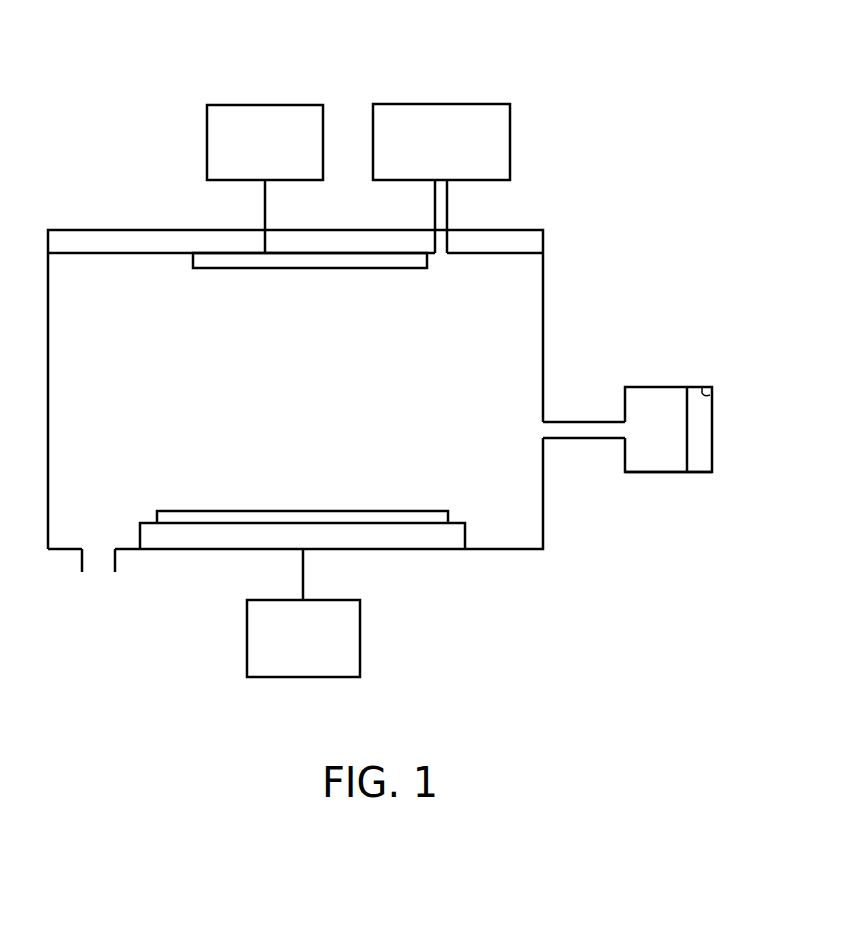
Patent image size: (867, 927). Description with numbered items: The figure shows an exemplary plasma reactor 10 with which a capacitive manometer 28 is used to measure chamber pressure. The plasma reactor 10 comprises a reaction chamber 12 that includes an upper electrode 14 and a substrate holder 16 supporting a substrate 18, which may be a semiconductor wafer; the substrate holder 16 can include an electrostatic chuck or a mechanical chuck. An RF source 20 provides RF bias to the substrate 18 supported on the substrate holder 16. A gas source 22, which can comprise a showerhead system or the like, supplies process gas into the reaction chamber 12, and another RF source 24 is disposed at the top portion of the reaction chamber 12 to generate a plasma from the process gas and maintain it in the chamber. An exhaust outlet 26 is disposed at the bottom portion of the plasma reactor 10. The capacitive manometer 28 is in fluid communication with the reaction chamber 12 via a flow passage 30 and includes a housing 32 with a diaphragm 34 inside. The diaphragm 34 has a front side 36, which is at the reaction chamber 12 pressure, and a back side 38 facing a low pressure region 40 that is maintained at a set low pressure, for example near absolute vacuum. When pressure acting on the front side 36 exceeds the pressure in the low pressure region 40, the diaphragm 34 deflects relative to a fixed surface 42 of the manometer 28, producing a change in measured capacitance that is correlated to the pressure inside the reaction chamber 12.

The plasma reactor 10 is at (114, 86).
The reaction chamber 12 is at (535, 290).
The upper electrode 14 is at (205, 258).
The substrate holder 16 is at (433, 540).
The substrate 18 is at (448, 513).
The RF source 20 is at (275, 680).
The gas source 22 is at (403, 104).
The RF source 24 is at (238, 104).
The exhaust outlet 26 is at (98, 555).
The capacitive manometer 28 is at (645, 482).
The flow passage 30 is at (583, 438).
The housing 32 is at (705, 472).
The diaphragm 34 is at (675, 404).
The front side 36 is at (687, 455).
The back side 38 is at (688, 437).
The low pressure region 40 is at (703, 408).
The surface 42 is at (702, 390).